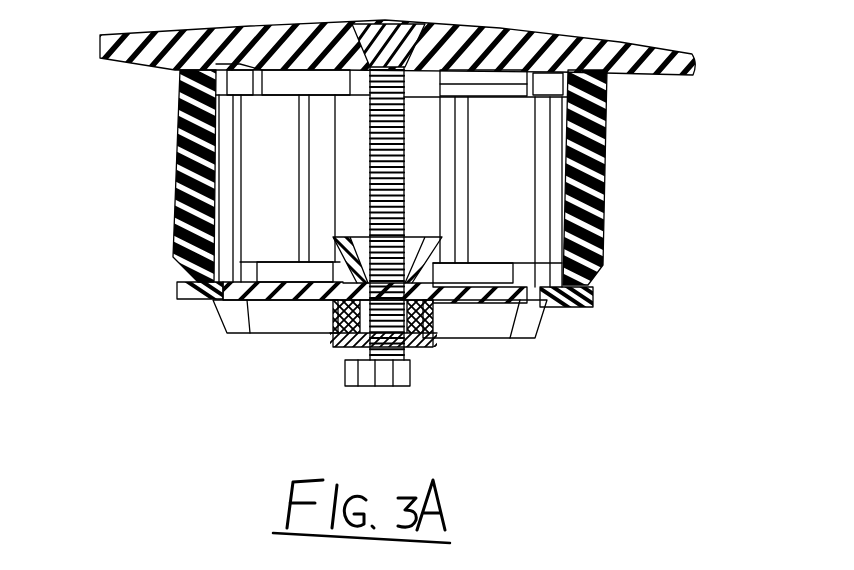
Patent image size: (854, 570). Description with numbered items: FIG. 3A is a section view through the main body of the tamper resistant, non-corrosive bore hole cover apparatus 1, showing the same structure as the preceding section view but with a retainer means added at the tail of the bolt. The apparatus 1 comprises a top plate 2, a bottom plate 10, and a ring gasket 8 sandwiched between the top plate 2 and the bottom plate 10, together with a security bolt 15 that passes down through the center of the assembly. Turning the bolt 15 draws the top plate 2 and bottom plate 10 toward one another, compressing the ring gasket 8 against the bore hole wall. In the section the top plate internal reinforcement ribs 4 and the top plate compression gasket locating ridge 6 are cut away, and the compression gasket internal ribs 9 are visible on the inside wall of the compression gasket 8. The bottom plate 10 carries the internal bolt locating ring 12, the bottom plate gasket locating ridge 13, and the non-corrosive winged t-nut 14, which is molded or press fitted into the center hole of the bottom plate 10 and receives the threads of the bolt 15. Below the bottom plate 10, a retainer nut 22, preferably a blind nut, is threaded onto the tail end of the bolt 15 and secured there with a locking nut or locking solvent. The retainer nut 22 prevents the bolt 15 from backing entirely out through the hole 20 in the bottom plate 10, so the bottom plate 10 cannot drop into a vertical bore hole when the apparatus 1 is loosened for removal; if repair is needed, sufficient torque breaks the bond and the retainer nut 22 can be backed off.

The non-corrosive bore hole cover apparatus 1 is at (163, 222).
The top plate 2 is at (693, 62).
The top plate internal reinforcement ribs 4 is at (560, 100).
The top plate compression gasket locating ridge 6 is at (232, 68).
The ring gasket 8 is at (605, 200).
The compression gasket internal ribs 9 is at (466, 168).
The bottom plate 10 is at (200, 307).
The internal bolt locating ring 12 is at (600, 238).
The bottom plate gasket locating ridge 13 is at (600, 270).
The non-corrosive winged t-nut 14 is at (440, 343).
The security bolt 15 is at (372, 145).
The hole 20 is at (312, 319).
The retainer nut 22 is at (377, 386).